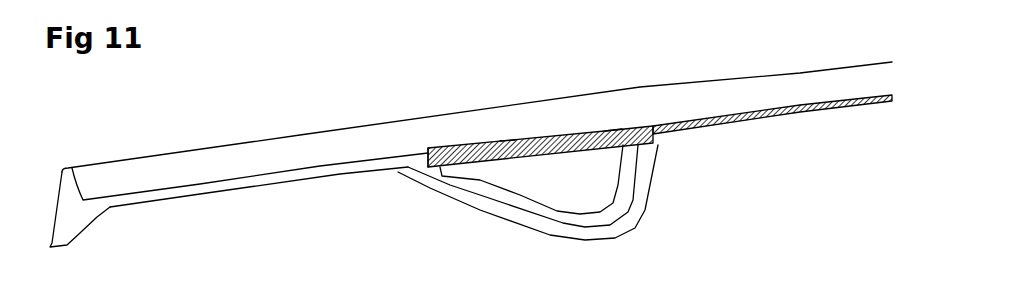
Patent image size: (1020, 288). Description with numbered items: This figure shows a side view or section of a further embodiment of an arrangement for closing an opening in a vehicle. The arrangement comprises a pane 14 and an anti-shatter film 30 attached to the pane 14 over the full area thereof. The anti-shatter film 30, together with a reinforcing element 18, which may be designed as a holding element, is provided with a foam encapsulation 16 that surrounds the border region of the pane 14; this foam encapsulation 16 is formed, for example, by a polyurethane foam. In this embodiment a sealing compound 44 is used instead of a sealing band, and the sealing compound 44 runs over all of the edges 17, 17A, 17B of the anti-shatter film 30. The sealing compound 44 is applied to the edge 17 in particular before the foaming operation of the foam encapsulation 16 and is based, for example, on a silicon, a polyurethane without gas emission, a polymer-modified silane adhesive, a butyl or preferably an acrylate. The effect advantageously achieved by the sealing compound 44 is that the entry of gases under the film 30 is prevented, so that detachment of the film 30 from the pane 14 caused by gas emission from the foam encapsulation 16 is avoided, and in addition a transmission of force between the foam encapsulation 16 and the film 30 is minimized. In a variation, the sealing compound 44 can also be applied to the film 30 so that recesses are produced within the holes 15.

The pane 14 is at (808, 85).
The foam encapsulation 16 is at (410, 167).
The anti-shatter film 30 is at (473, 150).
The holes 15 is at (543, 122).
The edge 17A is at (447, 150).
The edge 17B is at (507, 147).
The edge 17 is at (613, 131).
The sealing compound 44 is at (557, 152).
The reinforcing element 18 is at (488, 190).